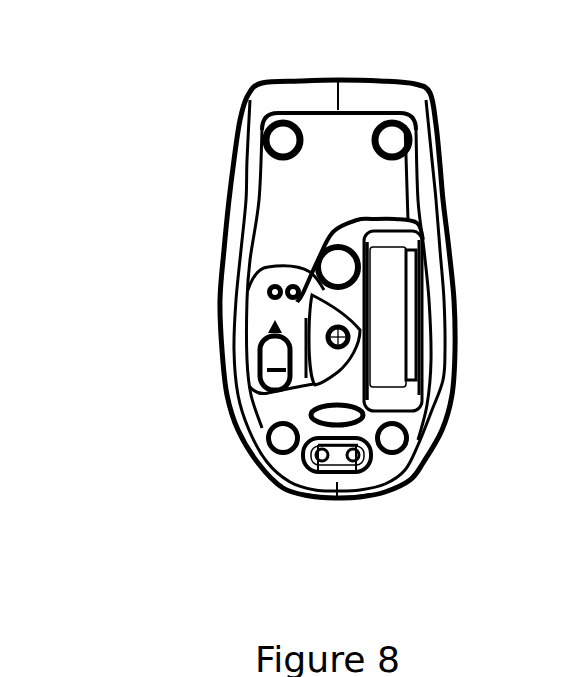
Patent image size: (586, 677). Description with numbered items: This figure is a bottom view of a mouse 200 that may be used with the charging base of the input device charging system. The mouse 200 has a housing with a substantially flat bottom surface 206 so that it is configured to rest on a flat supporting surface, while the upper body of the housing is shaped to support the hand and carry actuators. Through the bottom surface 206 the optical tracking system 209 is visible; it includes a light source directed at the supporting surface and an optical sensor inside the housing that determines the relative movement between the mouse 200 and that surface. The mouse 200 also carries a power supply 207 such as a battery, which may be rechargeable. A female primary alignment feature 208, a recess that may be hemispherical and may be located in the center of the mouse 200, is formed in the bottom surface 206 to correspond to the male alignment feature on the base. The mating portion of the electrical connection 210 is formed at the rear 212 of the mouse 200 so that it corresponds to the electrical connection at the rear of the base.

The mouse 200 is at (168, 98).
The bottom surface 206 is at (424, 202).
The power supply 207 is at (383, 332).
The female primary alignment feature 208 is at (333, 263).
The optical tracking system 209 is at (325, 336).
The electrical connection 210 is at (334, 453).
The rear 212 is at (330, 497).